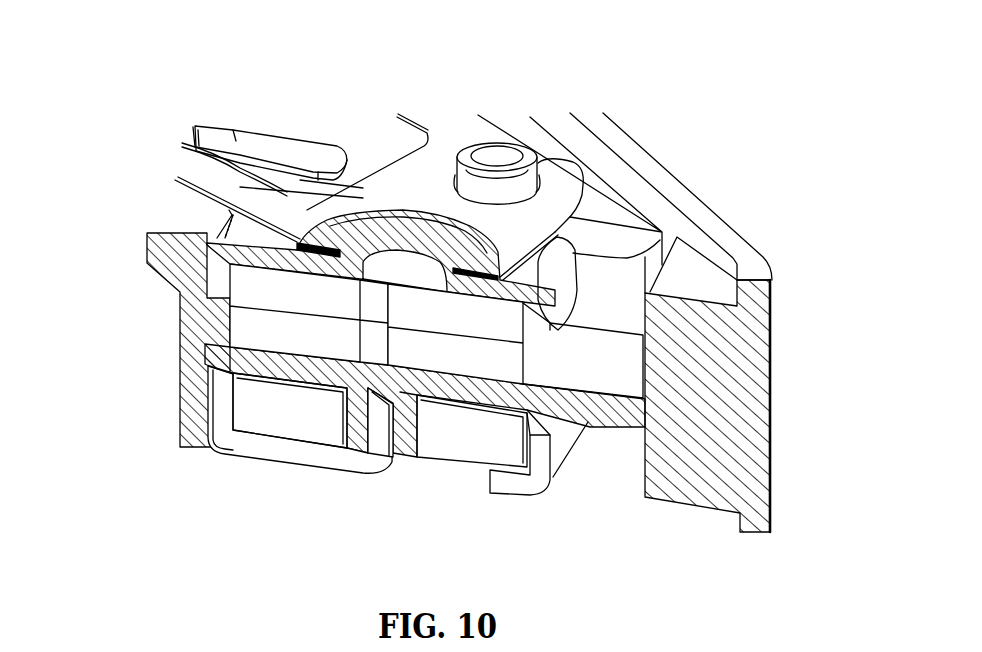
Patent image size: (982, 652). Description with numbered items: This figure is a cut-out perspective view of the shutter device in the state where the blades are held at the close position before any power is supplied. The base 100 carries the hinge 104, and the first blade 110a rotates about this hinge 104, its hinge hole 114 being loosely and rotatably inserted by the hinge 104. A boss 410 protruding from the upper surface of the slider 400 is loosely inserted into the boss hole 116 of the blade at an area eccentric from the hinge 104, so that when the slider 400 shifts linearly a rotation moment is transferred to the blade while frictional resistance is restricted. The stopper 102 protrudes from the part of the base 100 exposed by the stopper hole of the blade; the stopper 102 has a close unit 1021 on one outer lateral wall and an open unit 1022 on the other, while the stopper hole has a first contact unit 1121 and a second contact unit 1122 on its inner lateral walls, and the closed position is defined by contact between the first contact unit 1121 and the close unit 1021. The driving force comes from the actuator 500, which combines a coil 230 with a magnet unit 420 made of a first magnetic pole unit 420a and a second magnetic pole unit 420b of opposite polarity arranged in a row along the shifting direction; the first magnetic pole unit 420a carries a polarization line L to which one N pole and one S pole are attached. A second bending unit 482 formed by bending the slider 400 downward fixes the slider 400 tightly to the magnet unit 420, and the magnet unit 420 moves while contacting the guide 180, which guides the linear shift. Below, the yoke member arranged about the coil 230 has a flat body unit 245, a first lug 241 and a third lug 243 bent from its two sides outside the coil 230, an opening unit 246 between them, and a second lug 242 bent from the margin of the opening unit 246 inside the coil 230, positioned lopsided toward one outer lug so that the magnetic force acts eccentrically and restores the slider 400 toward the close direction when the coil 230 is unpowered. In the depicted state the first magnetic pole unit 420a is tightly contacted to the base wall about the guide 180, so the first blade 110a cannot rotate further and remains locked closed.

The base 100 is at (697, 213).
The stopper 102 is at (252, 120).
The close unit 1021 is at (255, 134).
The open unit 1022 is at (192, 132).
The hinge 104 is at (498, 150).
The first blade 110a is at (452, 132).
The hinge hole 114 is at (540, 163).
The first contact unit 1121 is at (397, 119).
The second contact unit 1122 is at (182, 145).
The boss hole 116 is at (312, 215).
The guide 180 is at (623, 292).
The slider 400 is at (518, 295).
The boss 410 is at (398, 225).
The magnet unit 420 is at (345, 311).
The first magnetic pole unit 420a is at (247, 318).
The second magnetic pole unit 420b is at (510, 357).
The second bending unit 482 is at (630, 260).
The actuator 500 is at (607, 323).
The coil 230 is at (250, 402).
The first lug 241 is at (217, 410).
The second lug 242 is at (380, 437).
The third lug 243 is at (542, 455).
The body unit 245 is at (275, 455).
The opening unit 246 is at (437, 465).
The polarization line L is at (243, 313).